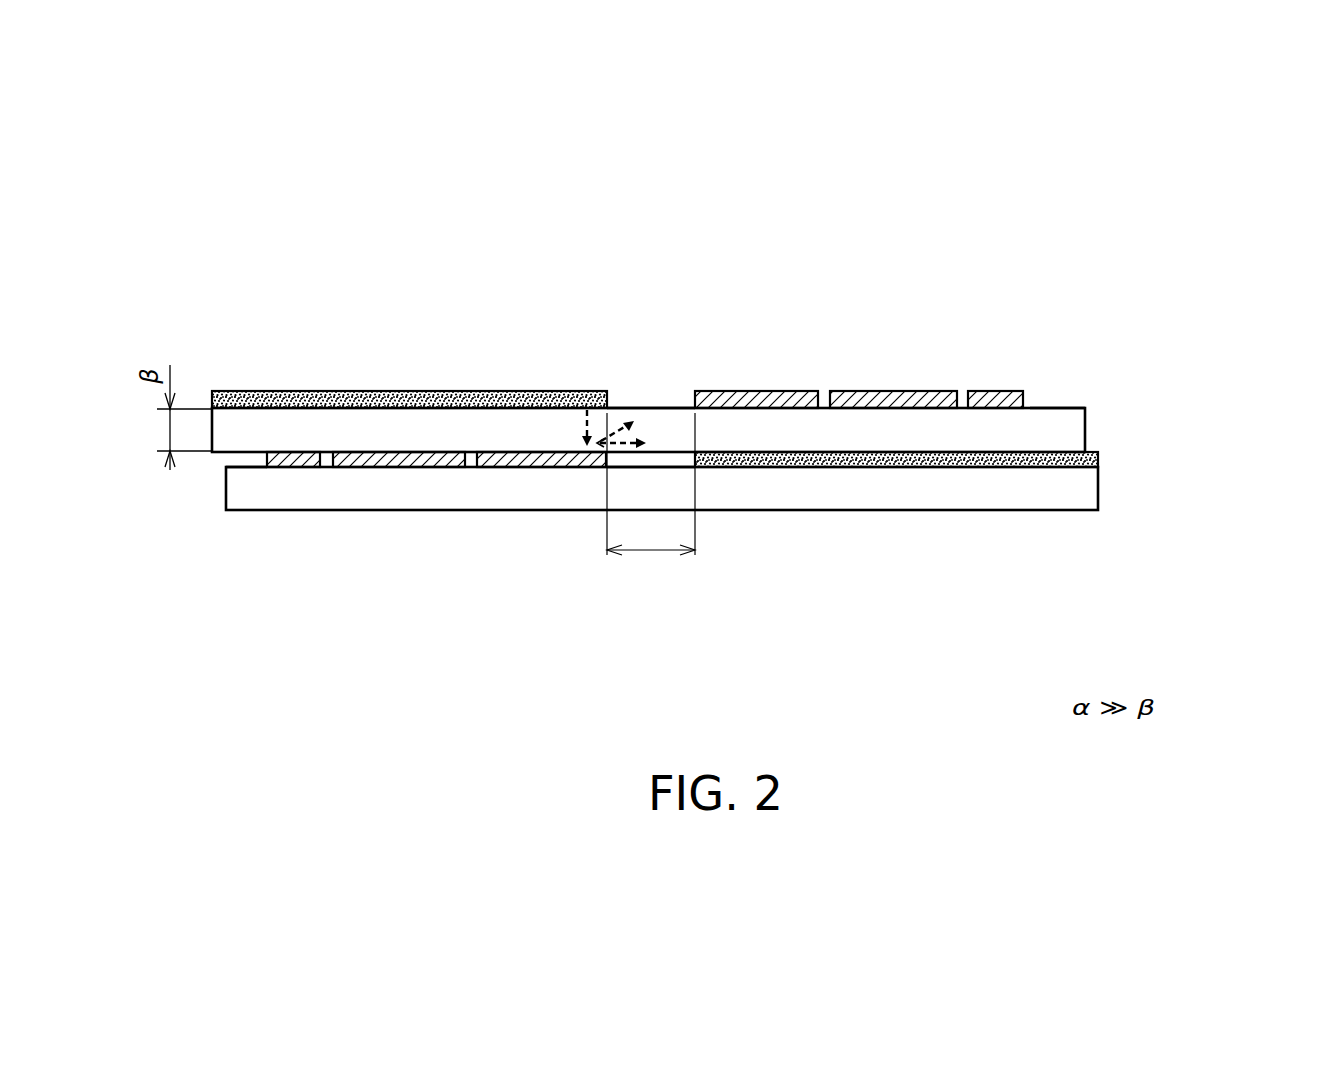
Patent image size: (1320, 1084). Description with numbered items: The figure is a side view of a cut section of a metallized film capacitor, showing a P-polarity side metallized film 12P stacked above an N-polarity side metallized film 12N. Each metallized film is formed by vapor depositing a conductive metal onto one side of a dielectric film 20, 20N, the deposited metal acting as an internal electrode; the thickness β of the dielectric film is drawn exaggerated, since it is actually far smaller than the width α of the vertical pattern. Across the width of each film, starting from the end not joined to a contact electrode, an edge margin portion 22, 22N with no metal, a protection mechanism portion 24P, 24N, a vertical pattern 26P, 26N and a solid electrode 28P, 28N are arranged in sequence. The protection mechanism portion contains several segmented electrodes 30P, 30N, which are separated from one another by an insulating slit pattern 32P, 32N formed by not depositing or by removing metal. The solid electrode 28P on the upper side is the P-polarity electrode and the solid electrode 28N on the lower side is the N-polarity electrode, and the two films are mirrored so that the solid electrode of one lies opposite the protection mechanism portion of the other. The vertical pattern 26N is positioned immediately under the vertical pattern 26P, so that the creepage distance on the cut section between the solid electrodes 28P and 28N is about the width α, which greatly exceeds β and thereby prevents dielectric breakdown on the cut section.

The metallized film 12P is at (1080, 392).
The metallized film 12N is at (1110, 495).
The dielectric film 20 is at (345, 427).
The dielectric film 20N is at (333, 503).
The edge margin portion 22 is at (1048, 395).
The edge margin portion 22N is at (248, 465).
The protection mechanism portion 24P is at (859, 300).
The protection mechanism portion 24N is at (436, 547).
The vertical pattern 26P is at (652, 390).
The vertical pattern 26N is at (662, 460).
The solid electrode 28P is at (437, 392).
The solid electrode 28N is at (923, 468).
The segmented electrode 30P is at (767, 390).
The segmented electrode 30N is at (420, 463).
The insulating slit pattern 32P is at (827, 390).
The insulating slit pattern 32N is at (468, 463).